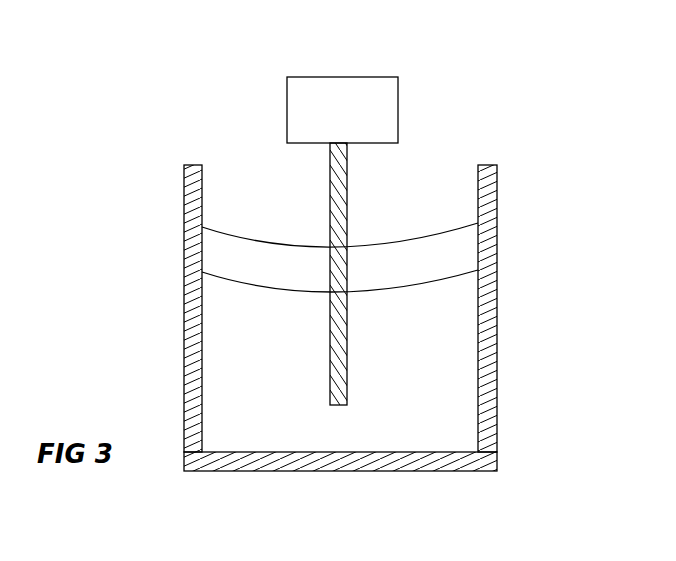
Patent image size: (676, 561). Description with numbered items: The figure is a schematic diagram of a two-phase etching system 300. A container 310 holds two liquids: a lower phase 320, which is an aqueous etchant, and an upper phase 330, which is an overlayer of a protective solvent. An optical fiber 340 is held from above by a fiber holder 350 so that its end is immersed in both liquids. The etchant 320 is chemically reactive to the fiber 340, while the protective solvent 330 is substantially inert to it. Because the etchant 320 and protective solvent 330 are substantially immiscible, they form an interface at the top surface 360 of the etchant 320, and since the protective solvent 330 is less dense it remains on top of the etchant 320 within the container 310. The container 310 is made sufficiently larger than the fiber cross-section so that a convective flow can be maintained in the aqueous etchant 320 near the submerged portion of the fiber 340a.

The two-phase etching system 300 is at (102, 155).
The container 310 is at (186, 257).
The lower phase 320 is at (396, 422).
The upper phase 330 is at (462, 245).
The optical fiber 340 is at (371, 181).
The submerged portion of the fiber 340a is at (330, 355).
The fiber holder 350 is at (357, 76).
The top surface of the etchant 360 is at (386, 291).